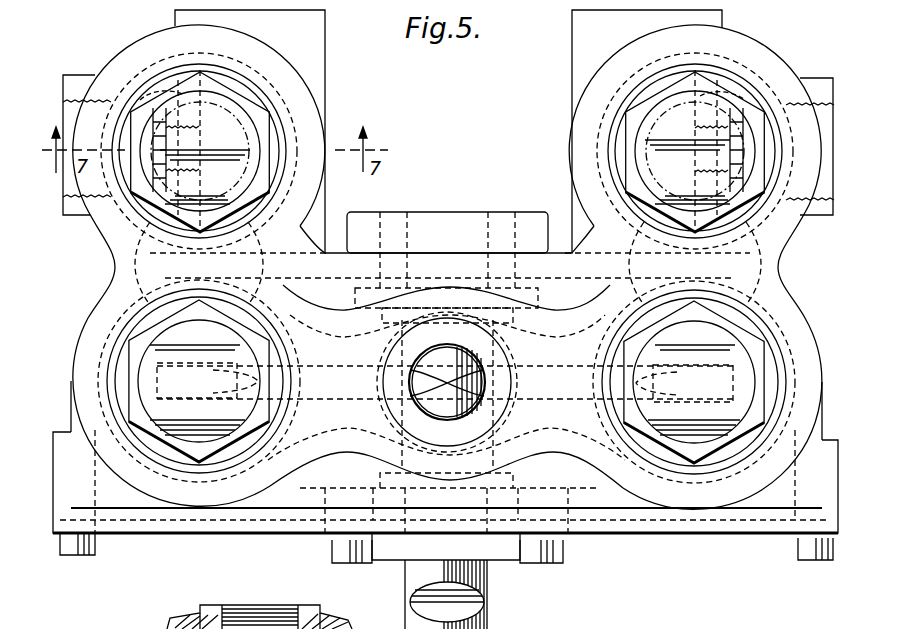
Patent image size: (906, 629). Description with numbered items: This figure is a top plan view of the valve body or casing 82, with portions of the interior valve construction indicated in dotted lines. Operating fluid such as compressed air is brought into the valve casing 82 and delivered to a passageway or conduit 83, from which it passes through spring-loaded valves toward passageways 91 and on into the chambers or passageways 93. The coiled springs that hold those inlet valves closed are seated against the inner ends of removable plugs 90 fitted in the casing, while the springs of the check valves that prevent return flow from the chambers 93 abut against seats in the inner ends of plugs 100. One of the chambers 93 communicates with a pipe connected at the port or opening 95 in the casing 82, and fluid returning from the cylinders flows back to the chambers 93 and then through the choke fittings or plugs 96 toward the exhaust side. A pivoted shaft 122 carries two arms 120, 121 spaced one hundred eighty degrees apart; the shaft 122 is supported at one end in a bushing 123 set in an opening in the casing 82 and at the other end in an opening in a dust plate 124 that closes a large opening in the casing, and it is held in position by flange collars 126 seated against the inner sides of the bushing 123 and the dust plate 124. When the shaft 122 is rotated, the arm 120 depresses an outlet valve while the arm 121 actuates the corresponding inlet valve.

The valve body or casing 82 is at (766, 510).
The passageway or conduit 83 is at (333, 428).
The removable plugs 90 is at (716, 357).
The passageways 91 is at (138, 268).
The chambers or passageways 93 is at (272, 78).
The port or opening 95 is at (81, 110).
The choke fittings or plugs 96 is at (152, 112).
The plugs 100 is at (448, 151).
The arm 120 is at (178, 392).
The arm 121 is at (740, 383).
The pivoted shaft 122 is at (493, 345).
The bushing 123 is at (365, 300).
The dust plate 124 is at (505, 550).
The flange collars 126 is at (385, 325).